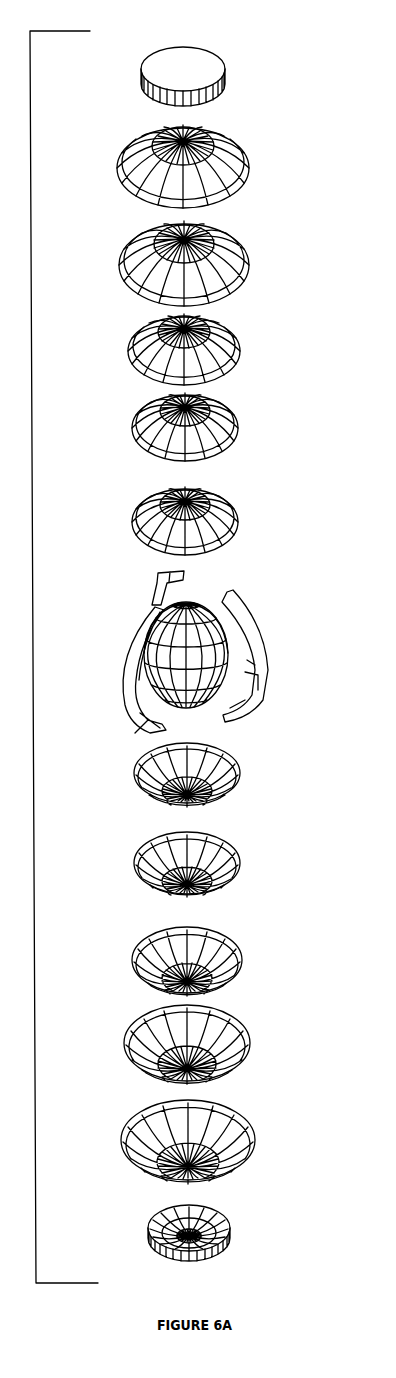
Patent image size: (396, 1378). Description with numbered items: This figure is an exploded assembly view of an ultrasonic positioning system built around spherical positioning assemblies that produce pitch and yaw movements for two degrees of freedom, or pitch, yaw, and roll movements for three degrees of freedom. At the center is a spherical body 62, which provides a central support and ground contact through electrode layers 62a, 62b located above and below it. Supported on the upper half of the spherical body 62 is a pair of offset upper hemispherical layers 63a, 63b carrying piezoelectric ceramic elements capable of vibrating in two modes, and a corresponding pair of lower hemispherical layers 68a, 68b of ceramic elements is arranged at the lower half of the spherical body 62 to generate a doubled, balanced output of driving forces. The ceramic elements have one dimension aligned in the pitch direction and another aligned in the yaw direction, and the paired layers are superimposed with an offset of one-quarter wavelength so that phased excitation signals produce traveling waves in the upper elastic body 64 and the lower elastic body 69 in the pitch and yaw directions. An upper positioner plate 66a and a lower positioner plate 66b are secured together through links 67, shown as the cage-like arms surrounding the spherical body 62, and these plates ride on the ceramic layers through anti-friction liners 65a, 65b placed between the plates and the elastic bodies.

The upper positioner plate 66a is at (225, 55).
The anti-friction liner 65a is at (238, 147).
The upper elastic body 64 is at (240, 240).
The upper hemispherical layer 63b is at (230, 333).
The upper hemispherical layer 63a is at (238, 413).
The electrode layer 62a is at (238, 503).
The spherical body 62 is at (207, 593).
The link 67 is at (270, 638).
The electrode layer 62b is at (243, 787).
The lower hemispherical layer 68a is at (238, 882).
The lower hemispherical layer 68b is at (238, 982).
The lower elastic body 69 is at (245, 1065).
The anti-friction liner 65b is at (243, 1162).
The lower positioner plate 66b is at (232, 1252).